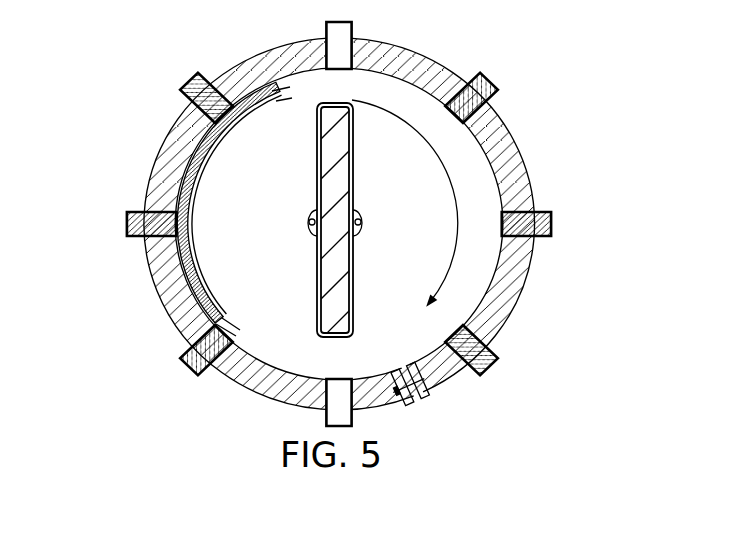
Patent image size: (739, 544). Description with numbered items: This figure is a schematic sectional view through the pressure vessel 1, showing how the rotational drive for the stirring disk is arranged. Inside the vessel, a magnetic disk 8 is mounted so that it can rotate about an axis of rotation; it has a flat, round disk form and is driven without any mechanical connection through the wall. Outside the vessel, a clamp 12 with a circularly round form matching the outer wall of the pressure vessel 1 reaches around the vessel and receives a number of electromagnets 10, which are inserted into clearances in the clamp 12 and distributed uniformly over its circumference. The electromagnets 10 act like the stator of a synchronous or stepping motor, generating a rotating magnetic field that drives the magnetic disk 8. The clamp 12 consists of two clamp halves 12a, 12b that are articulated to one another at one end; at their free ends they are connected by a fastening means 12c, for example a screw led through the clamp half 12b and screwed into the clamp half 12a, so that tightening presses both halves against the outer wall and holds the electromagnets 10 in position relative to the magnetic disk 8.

The pressure vessel 1 is at (262, 86).
The magnetic disk 8 is at (230, 185).
The electromagnet 10 is at (548, 230).
The clamp 12 is at (545, 125).
The clamp half 12a is at (170, 296).
The clamp half 12b is at (410, 68).
The fastening means 12c is at (427, 373).